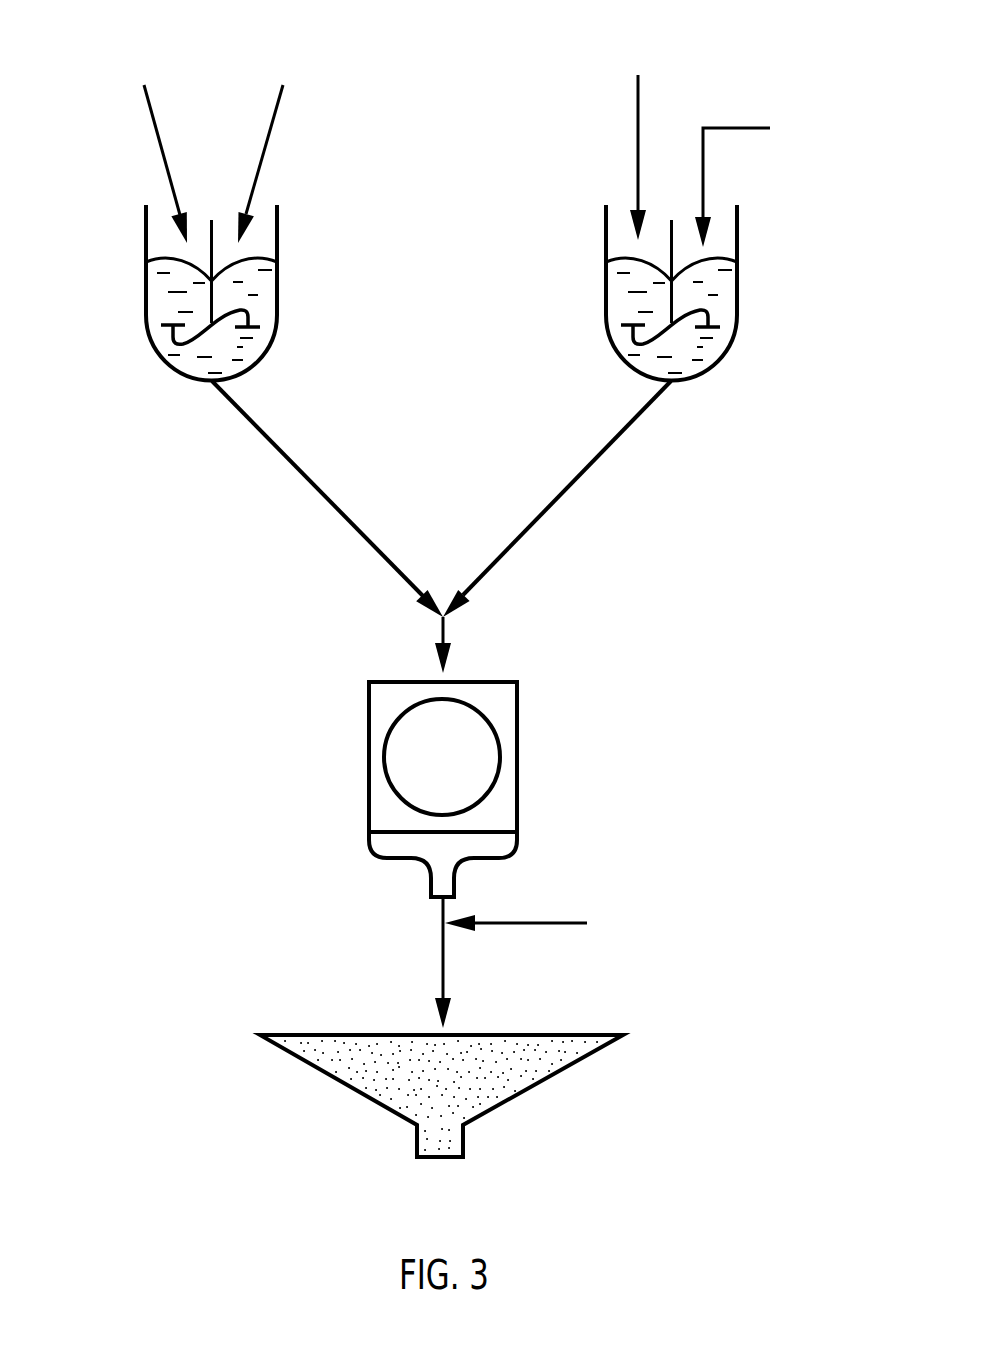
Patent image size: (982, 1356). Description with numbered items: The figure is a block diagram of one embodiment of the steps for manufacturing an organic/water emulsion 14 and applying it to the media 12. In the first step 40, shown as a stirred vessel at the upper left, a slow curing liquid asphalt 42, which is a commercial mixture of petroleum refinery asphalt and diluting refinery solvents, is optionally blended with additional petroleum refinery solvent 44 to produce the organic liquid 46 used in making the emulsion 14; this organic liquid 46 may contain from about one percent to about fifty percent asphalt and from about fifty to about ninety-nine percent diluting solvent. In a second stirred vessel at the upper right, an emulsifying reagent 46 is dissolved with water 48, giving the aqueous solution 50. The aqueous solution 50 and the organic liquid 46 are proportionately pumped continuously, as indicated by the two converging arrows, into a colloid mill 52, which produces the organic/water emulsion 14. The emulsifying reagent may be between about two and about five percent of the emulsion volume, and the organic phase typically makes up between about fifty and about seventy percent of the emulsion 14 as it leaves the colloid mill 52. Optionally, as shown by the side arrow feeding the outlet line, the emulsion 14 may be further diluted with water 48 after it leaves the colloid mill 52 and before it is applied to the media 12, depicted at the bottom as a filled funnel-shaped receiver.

The media 12 is at (540, 1065).
The organic/water emulsion 14 is at (443, 955).
The step 40 is at (267, 287).
The slow curing liquid asphalt 42 is at (150, 130).
The petroleum refinery solvent 44 is at (273, 128).
The organic liquid 46 is at (207, 527).
The water 48 is at (637, 130).
The aqueous solution 50 is at (568, 495).
The colloid mill 52 is at (500, 737).